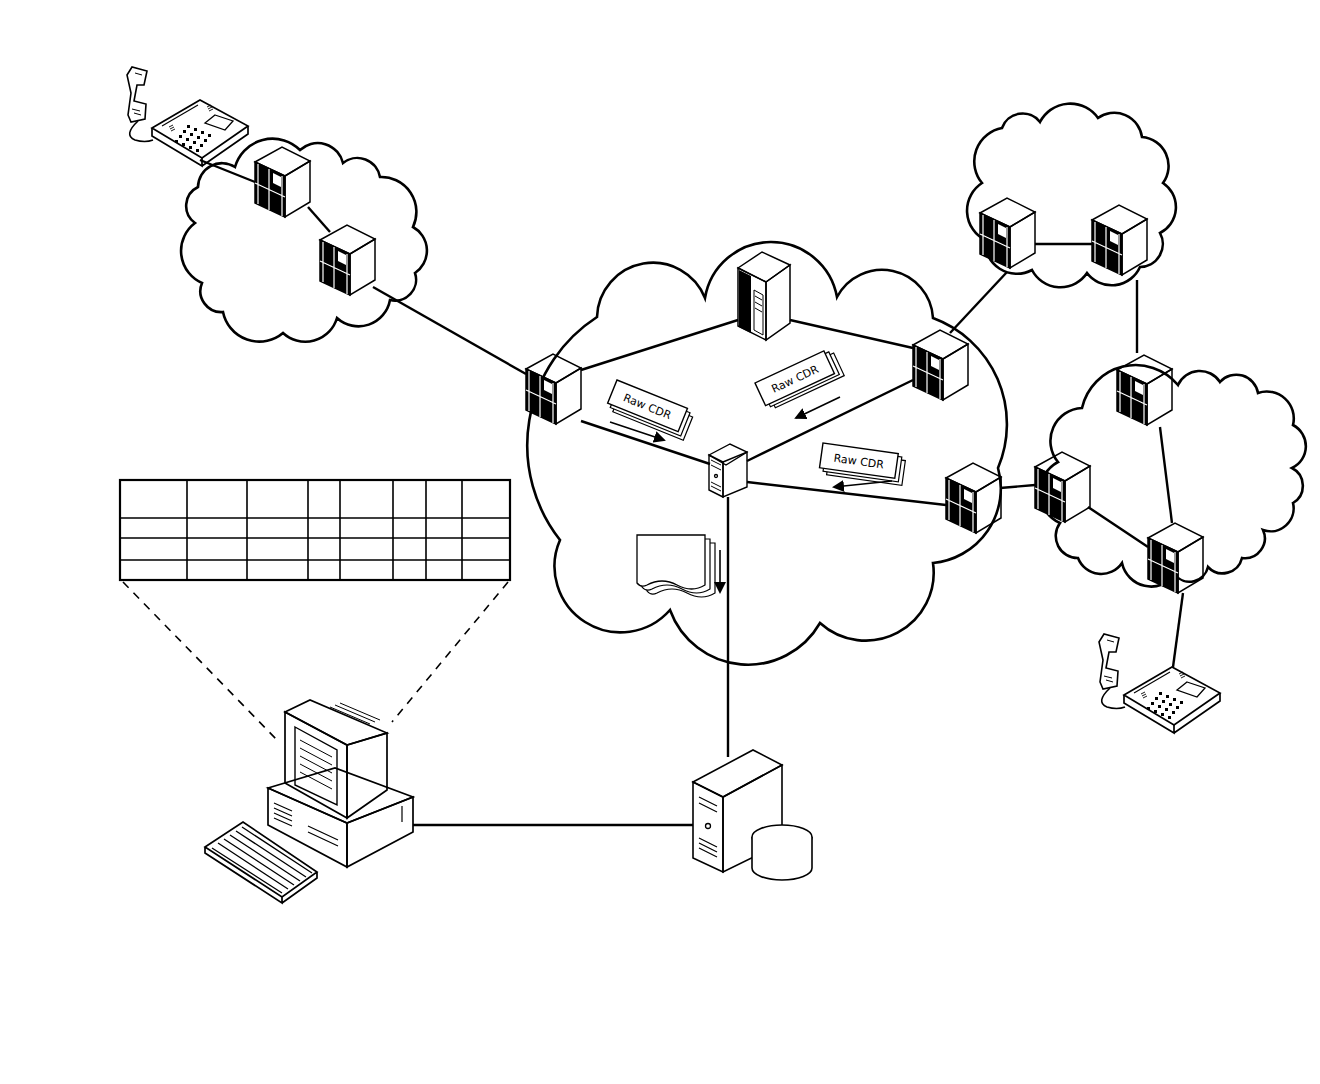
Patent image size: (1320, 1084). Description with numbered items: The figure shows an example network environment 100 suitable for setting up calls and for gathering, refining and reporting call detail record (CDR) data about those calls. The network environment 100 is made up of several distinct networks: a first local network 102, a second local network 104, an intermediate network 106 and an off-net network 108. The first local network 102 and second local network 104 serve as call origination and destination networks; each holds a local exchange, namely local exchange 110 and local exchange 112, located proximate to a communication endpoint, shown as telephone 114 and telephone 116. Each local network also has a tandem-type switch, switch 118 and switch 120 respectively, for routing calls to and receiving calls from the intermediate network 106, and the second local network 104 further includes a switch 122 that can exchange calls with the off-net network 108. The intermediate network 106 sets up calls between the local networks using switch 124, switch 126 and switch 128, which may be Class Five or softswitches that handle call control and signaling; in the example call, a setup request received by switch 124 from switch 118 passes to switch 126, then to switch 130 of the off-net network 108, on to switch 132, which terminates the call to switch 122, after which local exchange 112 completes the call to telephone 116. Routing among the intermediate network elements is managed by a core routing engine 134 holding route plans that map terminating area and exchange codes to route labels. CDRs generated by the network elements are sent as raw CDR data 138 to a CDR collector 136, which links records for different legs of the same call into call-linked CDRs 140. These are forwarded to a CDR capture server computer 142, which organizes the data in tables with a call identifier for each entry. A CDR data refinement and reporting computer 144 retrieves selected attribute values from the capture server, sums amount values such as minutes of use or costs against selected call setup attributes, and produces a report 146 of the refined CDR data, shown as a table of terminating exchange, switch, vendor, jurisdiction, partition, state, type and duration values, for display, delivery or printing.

The network environment 100 is at (1207, 128).
The first local network 102 is at (304, 240).
The second local network 104 is at (1173, 475).
The intermediate network 106 is at (767, 453).
The off-net network 108 is at (1071, 196).
The local exchange 110 is at (284, 150).
The local exchange 112 is at (1193, 577).
The telephone 114 is at (229, 112).
The telephone 116 is at (1197, 708).
The switch 118 is at (360, 240).
The switch 120 is at (1067, 466).
The switch 122 is at (1152, 367).
The switch 124 is at (540, 364).
The switch 126 is at (931, 338).
The switch 128 is at (969, 472).
The switch 130 is at (982, 212).
The switch 132 is at (1137, 252).
The core routing engine 134 is at (749, 256).
The CDR collector 136 is at (709, 473).
The raw CDR data 138 is at (765, 394).
The call-linked CDRs 140 is at (637, 547).
The CDR capture server computer 142 is at (693, 845).
The CDR data refinement and reporting computer 144 is at (388, 763).
The report 146 is at (368, 480).